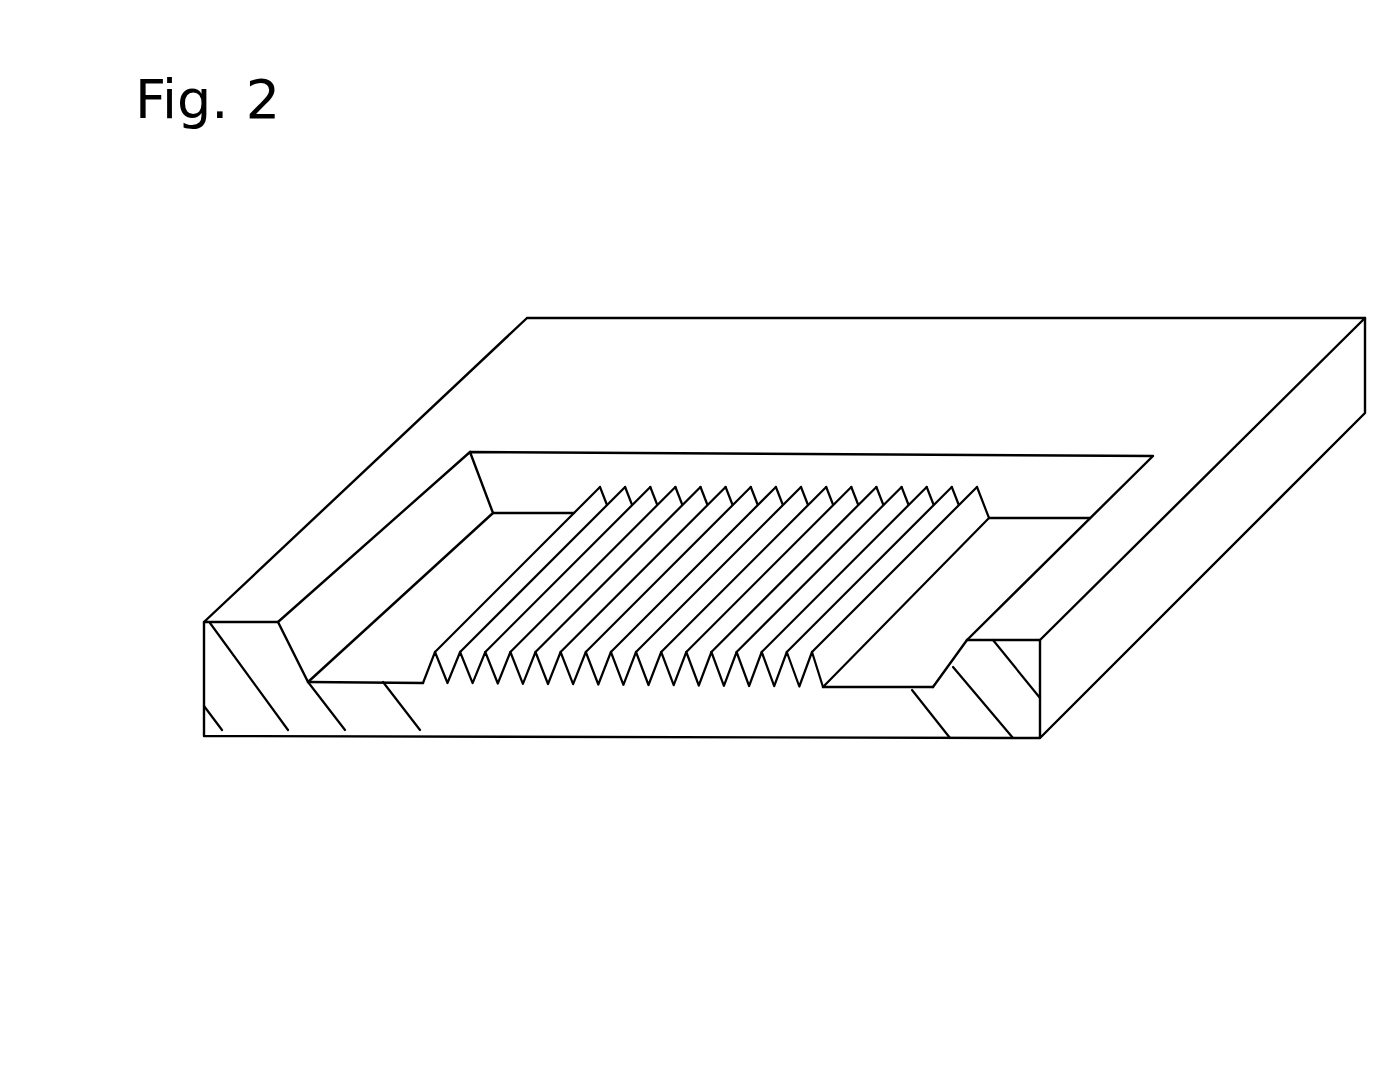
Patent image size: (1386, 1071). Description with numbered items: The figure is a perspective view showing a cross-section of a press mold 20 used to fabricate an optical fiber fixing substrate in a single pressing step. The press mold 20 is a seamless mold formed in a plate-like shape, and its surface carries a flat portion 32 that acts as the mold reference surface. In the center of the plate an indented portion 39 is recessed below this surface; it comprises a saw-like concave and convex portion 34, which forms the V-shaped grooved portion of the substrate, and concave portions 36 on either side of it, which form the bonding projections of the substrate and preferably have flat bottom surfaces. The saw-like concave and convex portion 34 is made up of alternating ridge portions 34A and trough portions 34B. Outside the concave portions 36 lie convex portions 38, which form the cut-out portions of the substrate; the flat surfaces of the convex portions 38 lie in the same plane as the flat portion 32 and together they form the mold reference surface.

The press mold 20 is at (1104, 262).
The flat portion 32 is at (820, 336).
The saw-like concave and convex portion 34 is at (763, 486).
The ridge portion of the saw-like concave and convex portion 34A is at (548, 540).
The trough portion of the saw-like concave and convex portion 34B is at (548, 684).
The concave portions 36 is at (395, 662).
The convex portions 38 is at (262, 594).
The indented portion 39 is at (890, 822).